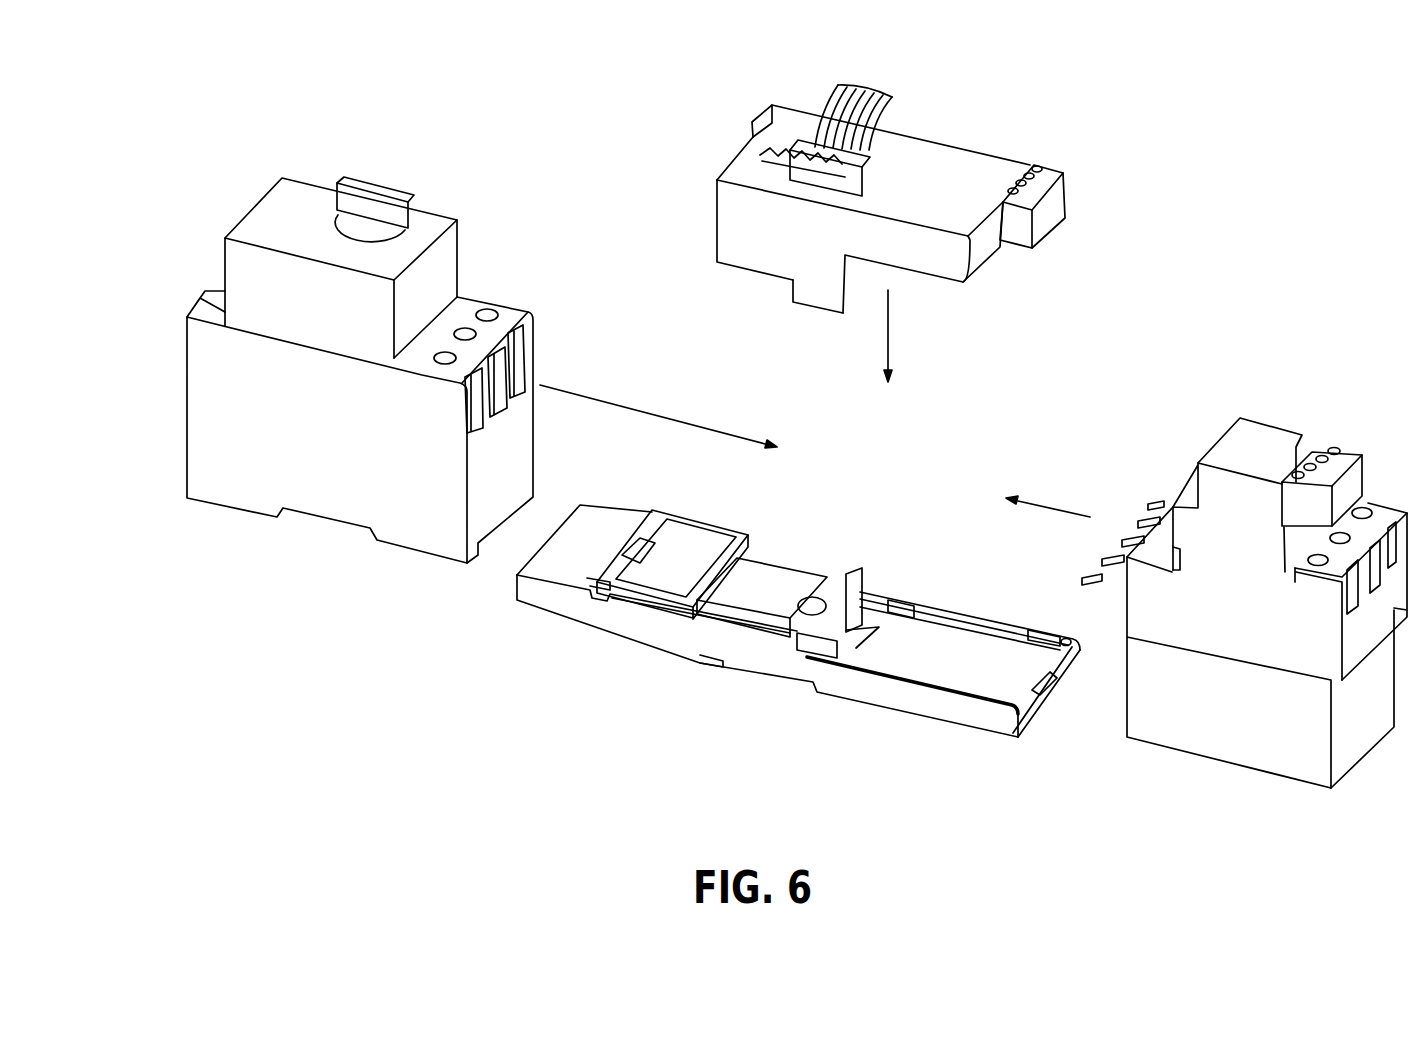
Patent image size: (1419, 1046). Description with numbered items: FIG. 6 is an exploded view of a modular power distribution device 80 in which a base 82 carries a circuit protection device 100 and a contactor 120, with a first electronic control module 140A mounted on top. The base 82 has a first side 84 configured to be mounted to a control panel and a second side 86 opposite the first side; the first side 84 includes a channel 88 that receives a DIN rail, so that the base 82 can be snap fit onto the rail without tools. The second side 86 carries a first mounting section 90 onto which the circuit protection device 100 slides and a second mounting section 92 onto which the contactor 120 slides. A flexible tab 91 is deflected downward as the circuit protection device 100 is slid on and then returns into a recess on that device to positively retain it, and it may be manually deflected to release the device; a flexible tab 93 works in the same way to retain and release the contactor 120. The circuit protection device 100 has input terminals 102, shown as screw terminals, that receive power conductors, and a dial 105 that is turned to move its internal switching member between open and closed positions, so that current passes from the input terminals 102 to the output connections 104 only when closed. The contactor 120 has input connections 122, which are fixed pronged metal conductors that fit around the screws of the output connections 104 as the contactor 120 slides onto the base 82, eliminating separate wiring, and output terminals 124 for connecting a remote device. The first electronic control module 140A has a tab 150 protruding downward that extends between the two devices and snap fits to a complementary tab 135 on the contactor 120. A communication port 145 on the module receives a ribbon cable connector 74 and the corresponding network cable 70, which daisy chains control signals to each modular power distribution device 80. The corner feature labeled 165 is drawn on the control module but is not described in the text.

The network cable 70 is at (823, 107).
The ribbon cable connector 74 is at (765, 142).
The modular power distribution device 80 is at (907, 182).
The base 82 is at (798, 617).
The first side 84 is at (865, 715).
The second side 86 is at (608, 563).
The channel 88 is at (724, 665).
The first mounting section 90 is at (866, 563).
The flexible tab 91 is at (825, 585).
The second mounting section 92 is at (1080, 606).
The flexible tab 93 is at (1040, 673).
The circuit protection device 100 is at (247, 490).
The input terminals 102 is at (212, 300).
The output connections 104 is at (503, 308).
The dial 105 is at (380, 190).
The contactor 120 is at (1232, 747).
The input connections 122 is at (1143, 513).
The output terminals 124 is at (1367, 508).
The complementary tab 135 is at (1182, 553).
The first electronic control module 140A is at (922, 147).
The communication port 145 is at (868, 176).
The tab 150 is at (833, 310).
The corner notch 165 is at (763, 96).